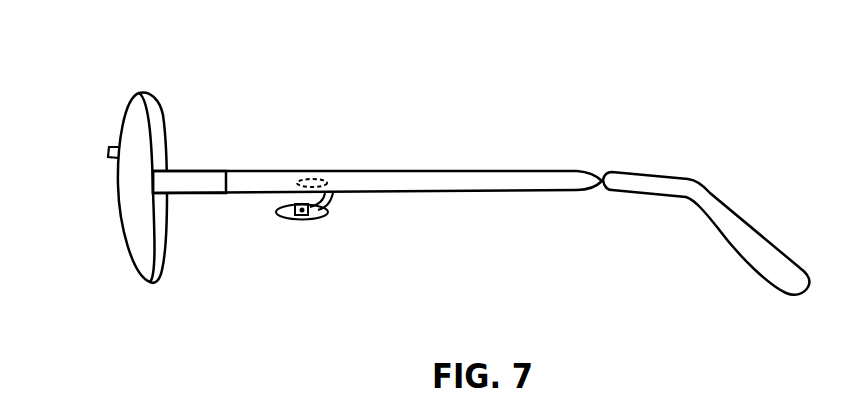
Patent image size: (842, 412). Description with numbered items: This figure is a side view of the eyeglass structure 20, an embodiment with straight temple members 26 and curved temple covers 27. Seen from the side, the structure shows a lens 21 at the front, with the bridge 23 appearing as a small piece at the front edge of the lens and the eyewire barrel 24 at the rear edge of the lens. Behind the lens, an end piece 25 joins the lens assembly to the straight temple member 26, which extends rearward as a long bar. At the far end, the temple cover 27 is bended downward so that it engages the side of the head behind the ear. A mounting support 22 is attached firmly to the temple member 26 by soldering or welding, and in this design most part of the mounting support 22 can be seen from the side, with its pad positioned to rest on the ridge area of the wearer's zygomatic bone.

The eyeglass structure 20 is at (372, 74).
The lens 21 is at (135, 215).
The mounting support 22 is at (323, 220).
The bridge 23 is at (116, 147).
The eyewire barrel 24 is at (165, 270).
The end piece 25 is at (200, 187).
The temple member 26 is at (507, 171).
The temple cover 27 is at (712, 192).